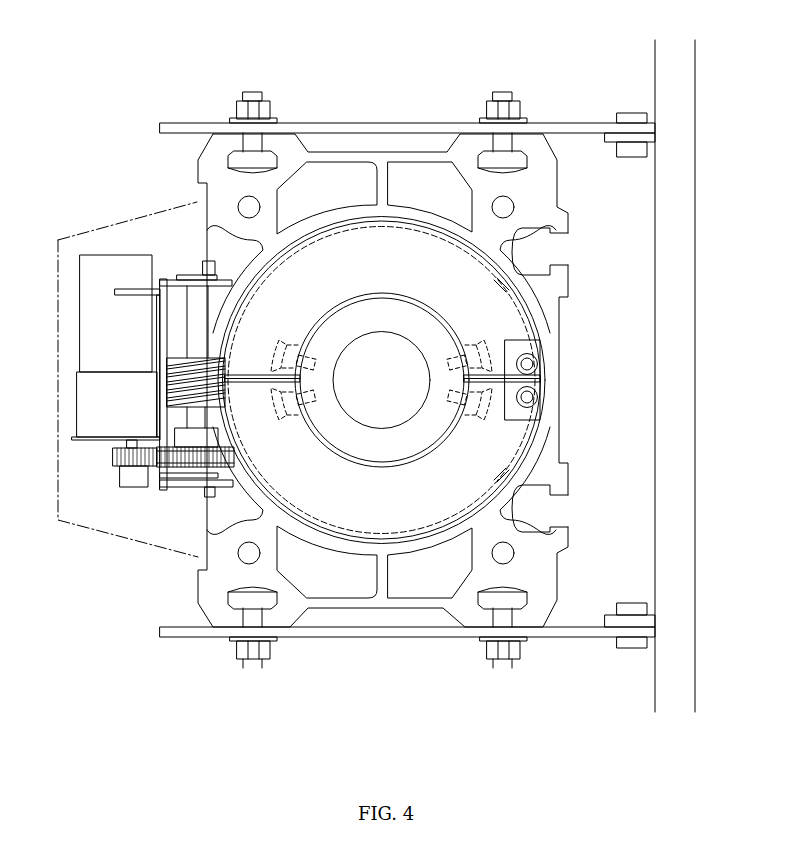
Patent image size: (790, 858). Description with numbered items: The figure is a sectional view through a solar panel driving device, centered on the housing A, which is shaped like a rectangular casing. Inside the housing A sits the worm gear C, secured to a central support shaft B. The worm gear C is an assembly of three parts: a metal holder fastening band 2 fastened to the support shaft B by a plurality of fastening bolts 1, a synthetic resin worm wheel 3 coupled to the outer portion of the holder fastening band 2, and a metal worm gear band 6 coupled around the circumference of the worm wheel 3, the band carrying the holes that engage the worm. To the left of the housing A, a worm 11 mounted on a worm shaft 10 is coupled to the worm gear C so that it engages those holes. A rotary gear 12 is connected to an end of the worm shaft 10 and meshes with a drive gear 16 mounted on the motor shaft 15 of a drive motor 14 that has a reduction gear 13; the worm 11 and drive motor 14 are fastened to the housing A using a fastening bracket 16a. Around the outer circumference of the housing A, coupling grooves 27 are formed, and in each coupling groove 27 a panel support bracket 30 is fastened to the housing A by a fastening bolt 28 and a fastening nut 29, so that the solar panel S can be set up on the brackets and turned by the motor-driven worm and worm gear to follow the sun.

The fastening bolts 1 is at (508, 348).
The holder fastening band 2 is at (433, 330).
The worm wheel 3 is at (495, 450).
The worm gear band 6 is at (320, 228).
The worm shaft 10 is at (192, 428).
The worm 11 is at (166, 376).
The rotary gear 12 is at (193, 456).
The reduction gear 13 is at (103, 406).
The drive motor 14 is at (93, 324).
The motor shaft 15 is at (127, 482).
The drive gear 16 is at (117, 458).
The fastening bracket 16a is at (163, 282).
The coupling grooves 27 is at (512, 176).
The fastening bolt 28 is at (499, 92).
The fastening nut 29 is at (517, 107).
The panel support bracket 30 is at (597, 125).
The housing A is at (400, 146).
The support shaft B is at (432, 325).
The worm gear C is at (535, 328).
The solar panel S is at (665, 552).